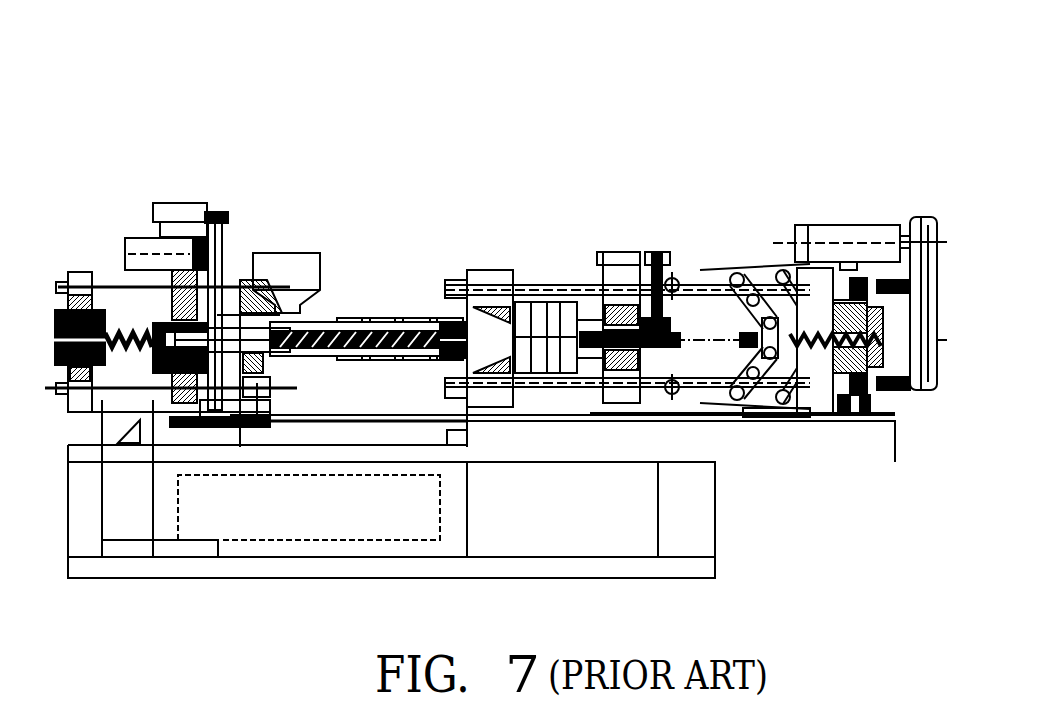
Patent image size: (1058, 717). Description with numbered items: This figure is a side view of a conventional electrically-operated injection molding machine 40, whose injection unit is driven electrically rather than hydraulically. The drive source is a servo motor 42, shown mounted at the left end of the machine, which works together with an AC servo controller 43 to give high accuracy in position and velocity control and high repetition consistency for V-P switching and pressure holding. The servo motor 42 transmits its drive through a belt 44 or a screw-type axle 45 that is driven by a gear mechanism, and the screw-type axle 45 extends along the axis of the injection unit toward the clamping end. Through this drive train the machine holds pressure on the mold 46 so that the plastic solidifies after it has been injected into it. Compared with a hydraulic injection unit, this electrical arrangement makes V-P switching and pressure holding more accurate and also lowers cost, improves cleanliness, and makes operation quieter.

The injection molding machine 40 is at (688, 223).
The servo motor 42 is at (97, 415).
The AC servo controller 43 is at (257, 407).
The belt 44 is at (215, 252).
The screw-type axle 45 is at (347, 318).
The mold 46 is at (585, 315).